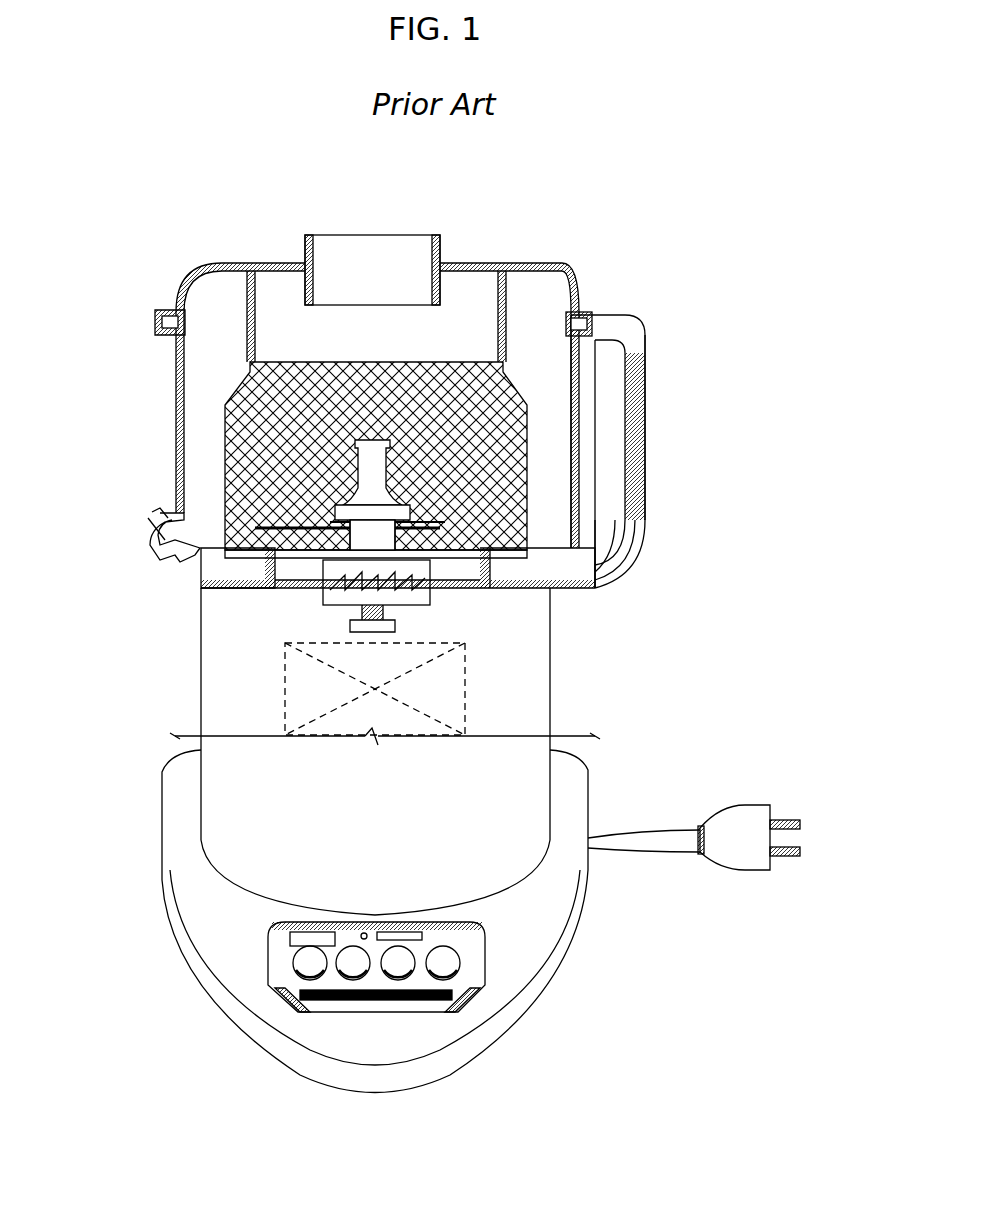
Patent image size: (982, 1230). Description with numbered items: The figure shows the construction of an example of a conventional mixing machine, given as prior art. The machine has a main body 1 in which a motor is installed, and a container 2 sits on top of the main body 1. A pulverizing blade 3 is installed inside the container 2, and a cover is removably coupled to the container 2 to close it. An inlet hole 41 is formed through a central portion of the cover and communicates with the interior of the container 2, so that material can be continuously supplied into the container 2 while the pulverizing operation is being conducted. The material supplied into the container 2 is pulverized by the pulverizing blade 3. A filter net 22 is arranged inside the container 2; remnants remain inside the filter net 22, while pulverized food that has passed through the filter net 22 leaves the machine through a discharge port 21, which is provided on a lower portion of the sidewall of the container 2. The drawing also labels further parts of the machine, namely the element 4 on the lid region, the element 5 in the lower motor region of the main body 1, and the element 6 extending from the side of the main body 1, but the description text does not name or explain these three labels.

The main body 1 is at (553, 714).
The container 2 is at (582, 450).
The pulverizing blade 3 is at (528, 500).
The lid 4 is at (568, 264).
The motor 5 is at (553, 663).
The power cord 6 is at (630, 830).
The discharge port 21 is at (160, 514).
The filter net 22 is at (528, 408).
The inlet hole 41 is at (430, 243).